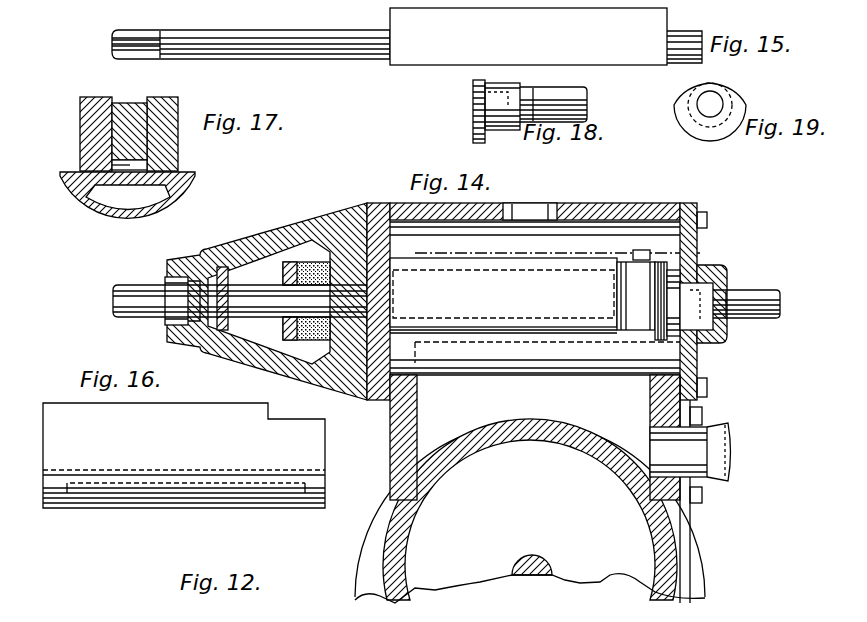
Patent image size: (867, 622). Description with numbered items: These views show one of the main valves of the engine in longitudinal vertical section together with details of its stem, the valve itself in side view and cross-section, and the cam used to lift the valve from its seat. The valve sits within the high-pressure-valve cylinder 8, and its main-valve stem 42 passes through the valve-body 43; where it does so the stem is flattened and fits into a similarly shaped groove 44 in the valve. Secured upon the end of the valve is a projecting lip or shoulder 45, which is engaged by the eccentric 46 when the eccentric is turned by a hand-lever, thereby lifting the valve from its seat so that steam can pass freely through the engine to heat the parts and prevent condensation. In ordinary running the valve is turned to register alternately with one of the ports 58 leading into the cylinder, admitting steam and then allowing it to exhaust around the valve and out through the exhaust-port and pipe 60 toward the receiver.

In FIG. 15, the main-valve stem 42 is at (300, 31).
In FIG. 14, the main-valve stem 42 is at (257, 285).
In FIG. 17, the valve-body 43 is at (178, 162).
In FIG. 16, the valve-body 43 is at (180, 436).
In FIG. 14, the valve-body 43 is at (484, 275).
In FIG. 17, the groove 44 is at (112, 163).
In FIG. 14, the projecting lip or shoulder 45 is at (622, 263).
In FIG. 18, the eccentric 46 is at (473, 112).
In FIG. 19, the eccentric 46 is at (747, 108).
In FIG. 14, the eccentric 46 is at (677, 300).
In FIG. 14, the high-pressure-valve cylinder 8 is at (665, 255).
In FIG. 14, the ports 58 is at (430, 441).
In FIG. 14, the pipe 60 is at (715, 465).